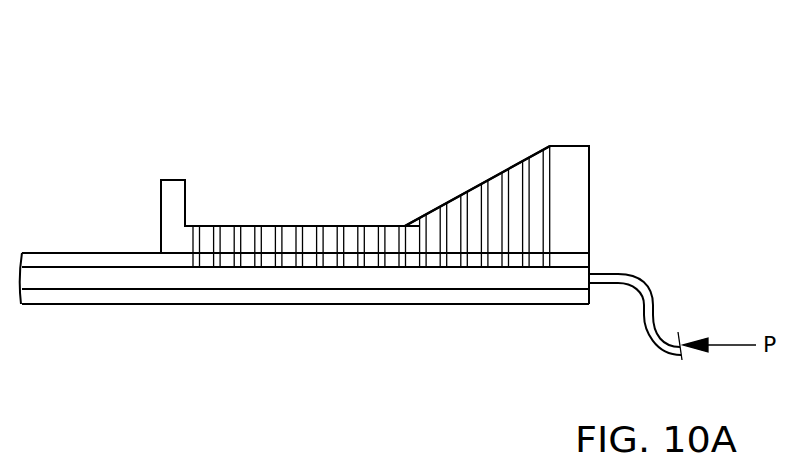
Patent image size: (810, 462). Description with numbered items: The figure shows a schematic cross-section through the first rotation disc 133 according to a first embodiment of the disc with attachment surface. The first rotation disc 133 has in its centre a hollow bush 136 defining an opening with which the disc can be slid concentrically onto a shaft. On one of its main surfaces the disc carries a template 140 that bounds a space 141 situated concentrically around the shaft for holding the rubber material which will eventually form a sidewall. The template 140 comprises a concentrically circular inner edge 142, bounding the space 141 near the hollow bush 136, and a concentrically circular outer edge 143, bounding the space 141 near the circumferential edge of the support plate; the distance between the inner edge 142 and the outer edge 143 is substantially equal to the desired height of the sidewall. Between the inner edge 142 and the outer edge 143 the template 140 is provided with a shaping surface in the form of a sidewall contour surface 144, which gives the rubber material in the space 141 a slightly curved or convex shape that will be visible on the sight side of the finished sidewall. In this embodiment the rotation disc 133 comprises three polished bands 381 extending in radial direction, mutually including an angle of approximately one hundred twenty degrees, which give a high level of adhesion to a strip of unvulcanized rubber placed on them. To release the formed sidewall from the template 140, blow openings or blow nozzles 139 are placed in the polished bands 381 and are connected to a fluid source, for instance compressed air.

The template 140 is at (128, 118).
The inner edge 142 is at (160, 184).
The hollow bush 136 is at (57, 260).
The blow nozzles 139 is at (259, 225).
The sidewall contour surface 144 is at (288, 225).
The polished bands 381 is at (352, 218).
The space 141 is at (499, 172).
The outer edge 143 is at (573, 146).
The first rotation disc 133 is at (588, 263).